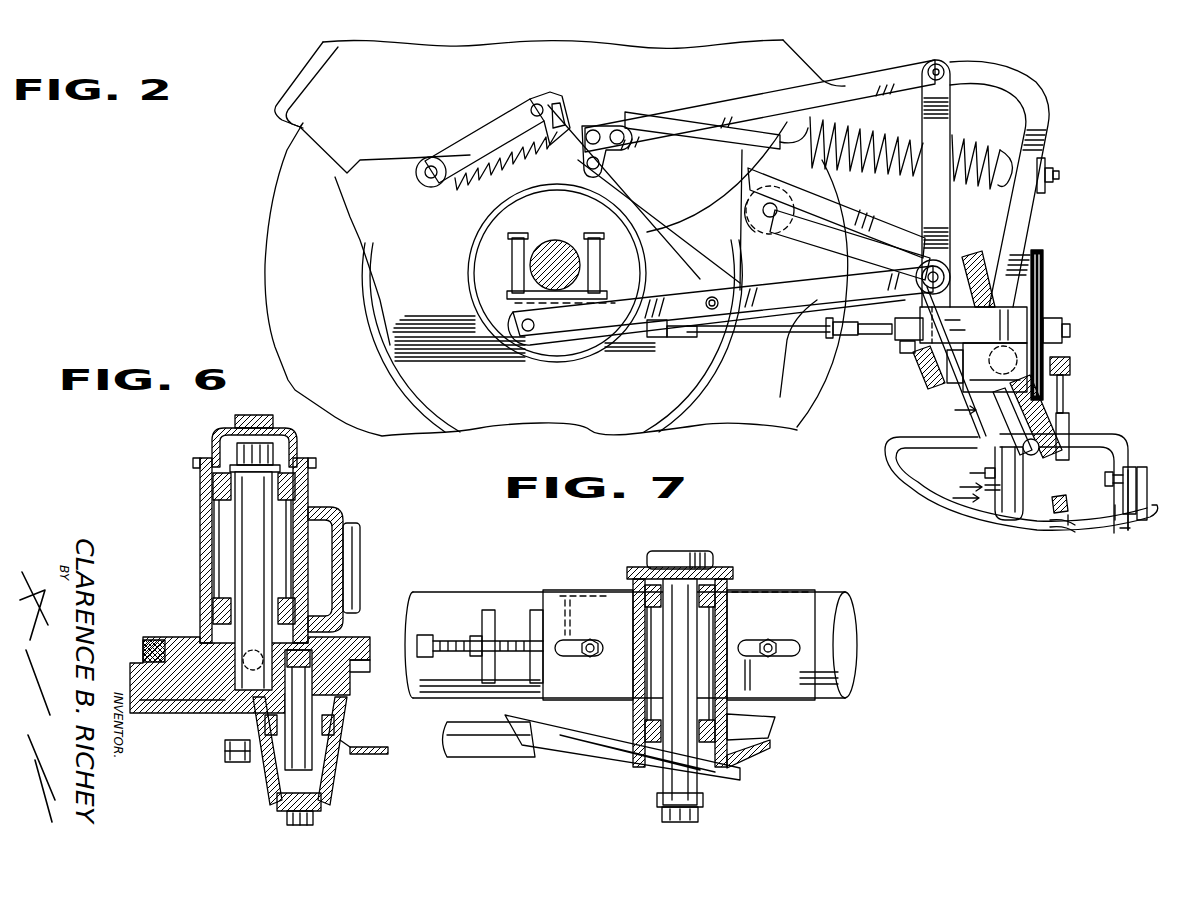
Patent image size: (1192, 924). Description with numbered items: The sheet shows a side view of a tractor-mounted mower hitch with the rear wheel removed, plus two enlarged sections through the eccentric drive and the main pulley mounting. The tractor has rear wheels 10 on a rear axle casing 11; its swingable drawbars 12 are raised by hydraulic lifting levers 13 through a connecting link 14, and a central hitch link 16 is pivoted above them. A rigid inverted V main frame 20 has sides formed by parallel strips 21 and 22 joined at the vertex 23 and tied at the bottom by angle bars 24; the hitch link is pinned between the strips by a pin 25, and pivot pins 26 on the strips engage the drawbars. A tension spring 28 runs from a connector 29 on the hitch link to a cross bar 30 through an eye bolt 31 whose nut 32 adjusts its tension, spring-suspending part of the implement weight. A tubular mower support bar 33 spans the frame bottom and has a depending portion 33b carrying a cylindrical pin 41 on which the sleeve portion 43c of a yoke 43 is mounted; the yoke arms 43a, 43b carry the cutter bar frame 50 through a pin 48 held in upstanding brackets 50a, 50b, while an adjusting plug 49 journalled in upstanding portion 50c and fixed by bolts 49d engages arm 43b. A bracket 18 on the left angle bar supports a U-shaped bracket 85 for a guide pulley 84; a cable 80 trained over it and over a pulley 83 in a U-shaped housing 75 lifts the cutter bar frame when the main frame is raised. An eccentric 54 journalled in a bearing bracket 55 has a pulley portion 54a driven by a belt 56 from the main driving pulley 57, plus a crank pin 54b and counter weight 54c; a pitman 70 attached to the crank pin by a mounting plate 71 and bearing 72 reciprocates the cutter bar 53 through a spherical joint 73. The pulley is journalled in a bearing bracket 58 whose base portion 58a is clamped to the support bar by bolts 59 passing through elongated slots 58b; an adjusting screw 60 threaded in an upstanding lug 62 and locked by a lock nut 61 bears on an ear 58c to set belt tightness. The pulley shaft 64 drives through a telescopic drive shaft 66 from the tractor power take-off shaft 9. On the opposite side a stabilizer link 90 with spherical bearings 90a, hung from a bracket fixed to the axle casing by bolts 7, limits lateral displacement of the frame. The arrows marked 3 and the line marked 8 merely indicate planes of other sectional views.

In FIG. 2, the tubular frame member 3 is at (980, 436).
In FIG. 2, the bolts 7 is at (514, 261).
In FIG. 2, the pivot 8 is at (510, 346).
In FIG. 2, the power take-off shaft 9 is at (617, 357).
In FIG. 2, the rear wheels 10 is at (823, 393).
In FIG. 2, the rear axle casing 11 is at (575, 357).
In FIG. 2, the drawbars 12 is at (808, 300).
In FIG. 2, the lifting levers 13 is at (477, 137).
In FIG. 2, the connecting link 14 is at (673, 250).
In FIG. 2, the central hitch link 16 is at (857, 87).
In FIG. 2, the bracket 18 is at (895, 338).
In FIG. 2, the main frame 20 is at (1025, 104).
In FIG. 2, the strips 21 is at (922, 108).
In FIG. 2, the strips 22 is at (1044, 112).
In FIG. 2, the vertex connection 23 is at (952, 80).
In FIG. 2, the angle bars 24 is at (955, 316).
In FIG. 2, the pin 25 is at (952, 72).
In FIG. 2, the pivot pins 26 is at (947, 262).
In FIG. 2, the tension spring 28 is at (985, 145).
In FIG. 2, the connector 29 is at (707, 128).
In FIG. 2, the cross bar 30 is at (1043, 165).
In FIG. 2, the eye bolt 31 is at (1057, 182).
In FIG. 2, the nut 32 is at (1053, 173).
In FIG. 6, the mower support bar 33 is at (350, 530).
In FIG. 7, the mower support bar 33 is at (857, 682).
In FIG. 2, the depending portion 33b is at (1070, 365).
In FIG. 2, the cylindrical pin 41 is at (1034, 460).
In FIG. 2, the yoke 43 is at (1105, 431).
In FIG. 2, the depending arm portion 43a is at (1127, 460).
In FIG. 2, the depending arm portion 43b is at (1043, 499).
In FIG. 2, the sleeve portion 43c is at (1010, 410).
In FIG. 2, the pin 48 is at (1106, 480).
In FIG. 2, the adjusting plug 49 is at (985, 488).
In FIG. 2, the bolts 49d is at (985, 473).
In FIG. 2, the cutter bar frame 50 is at (1129, 535).
In FIG. 2, the upstanding bracket 50a is at (1118, 507).
In FIG. 2, the upstanding bracket 50b is at (1140, 465).
In FIG. 2, the upstanding portion 50c is at (996, 462).
In FIG. 2, the cutter bar 53 is at (1072, 515).
In FIG. 2, the eccentric 54 is at (1066, 341).
In FIG. 6, the eccentric 54 is at (192, 642).
In FIG. 6, the pulley portion 54a is at (150, 645).
In FIG. 6, the crank pin 54b is at (303, 705).
In FIG. 6, the counter weight 54c is at (160, 712).
In FIG. 6, the bearing bracket 55 is at (205, 512).
In FIG. 2, the belt 56 is at (1043, 297).
In FIG. 6, the belt 56 is at (357, 673).
In FIG. 7, the belt 56 is at (467, 742).
In FIG. 7, the main driving pulley 57 is at (622, 763).
In FIG. 7, the bearing bracket 58 is at (730, 613).
In FIG. 7, the base portion 58a is at (810, 603).
In FIG. 7, the elongated slots 58b is at (575, 652).
In FIG. 7, the upstanding ear 58c is at (538, 610).
In FIG. 7, the bolts 59 is at (590, 640).
In FIG. 7, the adjusting screw 60 is at (433, 645).
In FIG. 7, the lock nut 61 is at (476, 638).
In FIG. 7, the upstanding lug 62 is at (492, 610).
In FIG. 7, the shaft 64 is at (765, 727).
In FIG. 2, the telescopically extensible drive shaft 66 is at (794, 358).
In FIG. 2, the pitman 70 is at (1069, 422).
In FIG. 6, the mounting plate 71 is at (363, 753).
In FIG. 6, the bearing 72 is at (268, 760).
In FIG. 2, the spherical bearing type joint 73 is at (1058, 513).
In FIG. 2, the U-shaped housing 75 is at (867, 220).
In FIG. 2, the cable 80 is at (745, 255).
In FIG. 2, the guide pulley 83 is at (765, 235).
In FIG. 2, the guide pulley 84 is at (912, 349).
In FIG. 2, the U-shaped bracket 85 is at (940, 387).
In FIG. 2, the stabilizer link 90 is at (705, 338).
In FIG. 2, the spherical-type bearings 90a is at (927, 265).